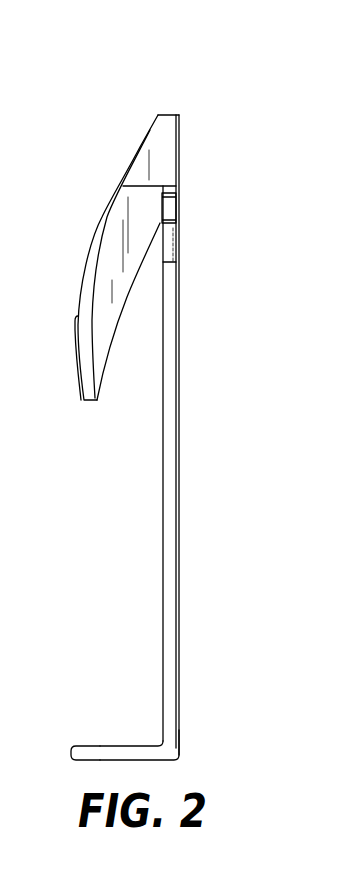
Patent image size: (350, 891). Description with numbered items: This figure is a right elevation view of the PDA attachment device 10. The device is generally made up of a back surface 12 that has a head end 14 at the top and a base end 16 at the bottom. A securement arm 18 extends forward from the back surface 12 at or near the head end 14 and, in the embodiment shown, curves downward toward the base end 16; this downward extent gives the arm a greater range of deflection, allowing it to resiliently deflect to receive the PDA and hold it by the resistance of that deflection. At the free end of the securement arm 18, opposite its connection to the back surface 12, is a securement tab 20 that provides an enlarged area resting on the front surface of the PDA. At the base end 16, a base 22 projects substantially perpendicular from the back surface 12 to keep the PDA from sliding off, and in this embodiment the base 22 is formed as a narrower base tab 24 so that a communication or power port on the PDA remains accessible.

The PDA attachment device 10 is at (173, 84).
The back surface 12 is at (177, 472).
The head end 14 is at (173, 128).
The base end 16 is at (179, 731).
The securement arms 18 is at (102, 217).
The securement tabs 20 is at (68, 334).
The base 22 is at (59, 716).
The base tabs 24 is at (87, 750).